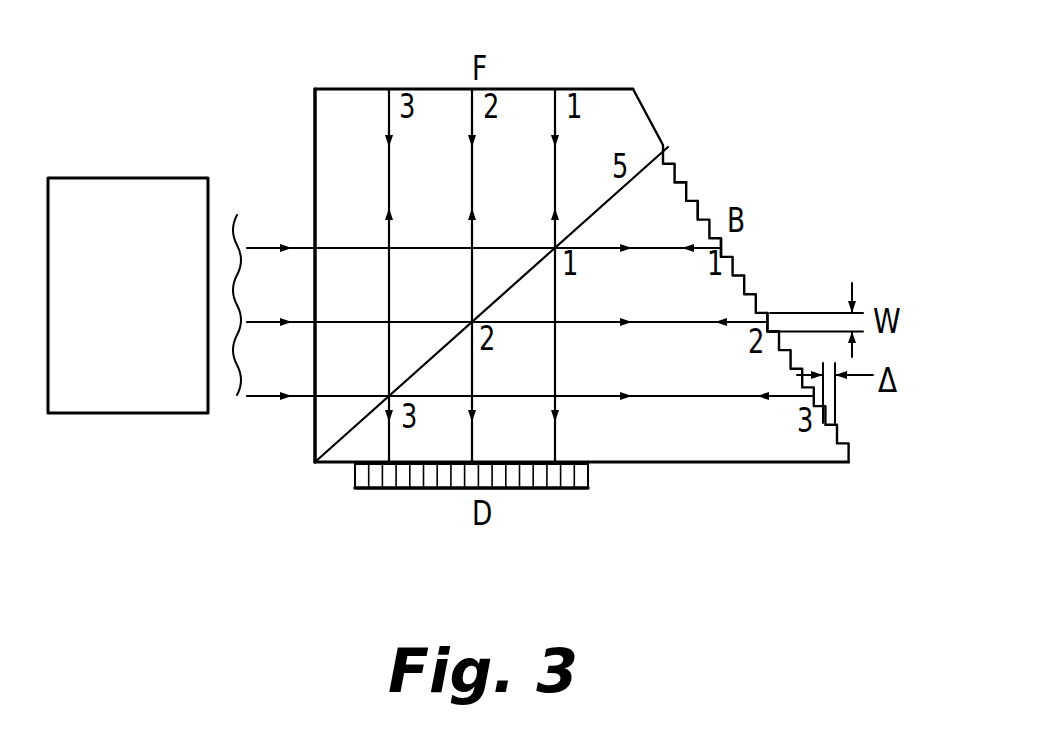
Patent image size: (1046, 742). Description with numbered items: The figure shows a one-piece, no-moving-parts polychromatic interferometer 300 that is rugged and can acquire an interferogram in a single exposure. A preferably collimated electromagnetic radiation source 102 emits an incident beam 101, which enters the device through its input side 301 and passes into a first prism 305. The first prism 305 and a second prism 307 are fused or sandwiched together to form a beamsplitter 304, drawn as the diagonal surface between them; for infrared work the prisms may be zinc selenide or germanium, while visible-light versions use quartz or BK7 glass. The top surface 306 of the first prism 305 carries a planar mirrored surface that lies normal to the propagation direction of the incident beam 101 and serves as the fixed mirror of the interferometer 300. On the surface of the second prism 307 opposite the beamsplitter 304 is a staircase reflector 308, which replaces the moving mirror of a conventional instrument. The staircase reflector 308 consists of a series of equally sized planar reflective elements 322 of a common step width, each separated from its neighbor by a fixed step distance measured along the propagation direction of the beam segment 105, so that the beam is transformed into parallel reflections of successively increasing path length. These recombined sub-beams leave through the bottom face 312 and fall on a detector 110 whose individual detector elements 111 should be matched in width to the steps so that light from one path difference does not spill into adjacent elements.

The electromagnetic radiation source 102 is at (122, 178).
The incident beam 101 is at (270, 413).
The polychromatic interferometer 300 is at (250, 462).
The input wavefront 301 is at (313, 215).
The first prism 305 is at (338, 173).
The top surface 306 is at (612, 88).
The second prism 307 is at (655, 187).
The planar reflective elements 322 is at (723, 247).
The staircase reflector 308 is at (777, 310).
The bottom face 312 is at (737, 466).
The beamsplitter 304 is at (358, 433).
The beam segment 105 is at (762, 412).
The detector elements 111 is at (585, 490).
The detector 110 is at (548, 528).